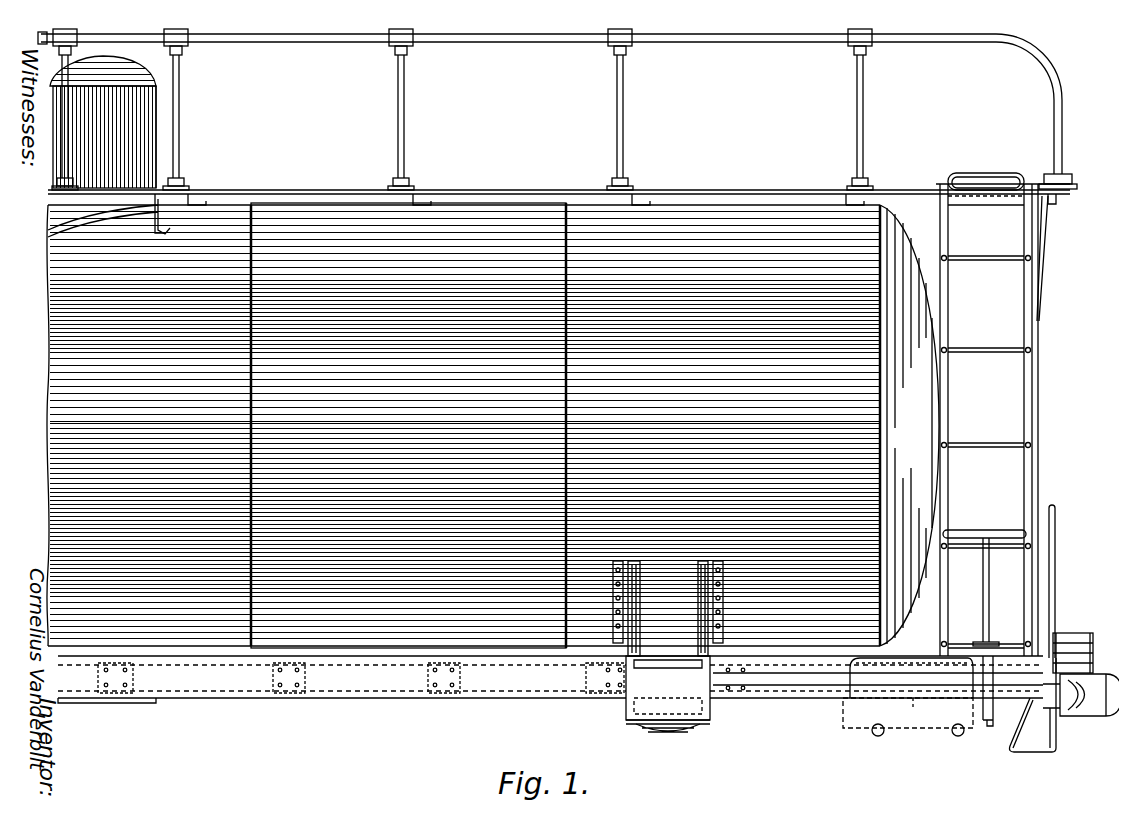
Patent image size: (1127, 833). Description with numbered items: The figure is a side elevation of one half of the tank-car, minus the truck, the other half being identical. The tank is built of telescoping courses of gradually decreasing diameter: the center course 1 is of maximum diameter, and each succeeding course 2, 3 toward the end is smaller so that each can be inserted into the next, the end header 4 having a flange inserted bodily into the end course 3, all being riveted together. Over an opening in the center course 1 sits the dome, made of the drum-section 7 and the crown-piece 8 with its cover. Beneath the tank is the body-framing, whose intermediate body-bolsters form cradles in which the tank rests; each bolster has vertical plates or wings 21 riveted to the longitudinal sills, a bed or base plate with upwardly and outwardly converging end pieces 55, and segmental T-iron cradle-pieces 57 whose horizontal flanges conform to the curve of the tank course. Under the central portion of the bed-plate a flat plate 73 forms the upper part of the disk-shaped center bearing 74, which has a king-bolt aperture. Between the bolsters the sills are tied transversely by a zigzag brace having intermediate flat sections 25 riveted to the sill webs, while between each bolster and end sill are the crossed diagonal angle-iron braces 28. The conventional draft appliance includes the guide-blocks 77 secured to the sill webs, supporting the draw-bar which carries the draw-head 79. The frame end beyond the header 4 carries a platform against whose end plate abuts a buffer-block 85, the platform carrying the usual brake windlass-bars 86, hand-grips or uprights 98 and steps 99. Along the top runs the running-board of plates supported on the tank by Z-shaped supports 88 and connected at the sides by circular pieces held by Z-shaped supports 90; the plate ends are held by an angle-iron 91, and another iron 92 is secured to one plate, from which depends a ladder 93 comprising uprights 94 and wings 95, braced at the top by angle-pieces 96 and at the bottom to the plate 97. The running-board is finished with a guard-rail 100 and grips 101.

The center course 1 is at (162, 212).
The tank course 2 is at (500, 214).
The end course 3 is at (706, 214).
The end header 4 is at (909, 425).
The drum-section 7 is at (150, 116).
The crown-piece 8 is at (112, 62).
The bolster wing 21 is at (633, 640).
The flat section 25 is at (286, 682).
The angle-iron brace 28 is at (742, 676).
The end piece 55 is at (668, 688).
The cradle-piece 57 is at (604, 631).
The flat plate 73 is at (704, 708).
The center bearing 74 is at (672, 722).
The guide-block 77 is at (912, 720).
The draw-head 79 is at (1096, 710).
The buffer-block 85 is at (1068, 626).
The brake windlass-bar 86 is at (980, 616).
The Z-shaped support 88 is at (190, 192).
The Z-shaped support 90 is at (180, 182).
The angle-iron 91 is at (1046, 194).
The iron 92 is at (982, 196).
The ladder 93 is at (1052, 420).
The upright 94 is at (1014, 380).
The wing 95 is at (982, 252).
The angle-piece 96 is at (1036, 236).
The plate 97 is at (979, 718).
The hand-grip 98 is at (1046, 606).
The step 99 is at (1030, 742).
The guard-rail 100 is at (400, 152).
The grip 101 is at (986, 165).